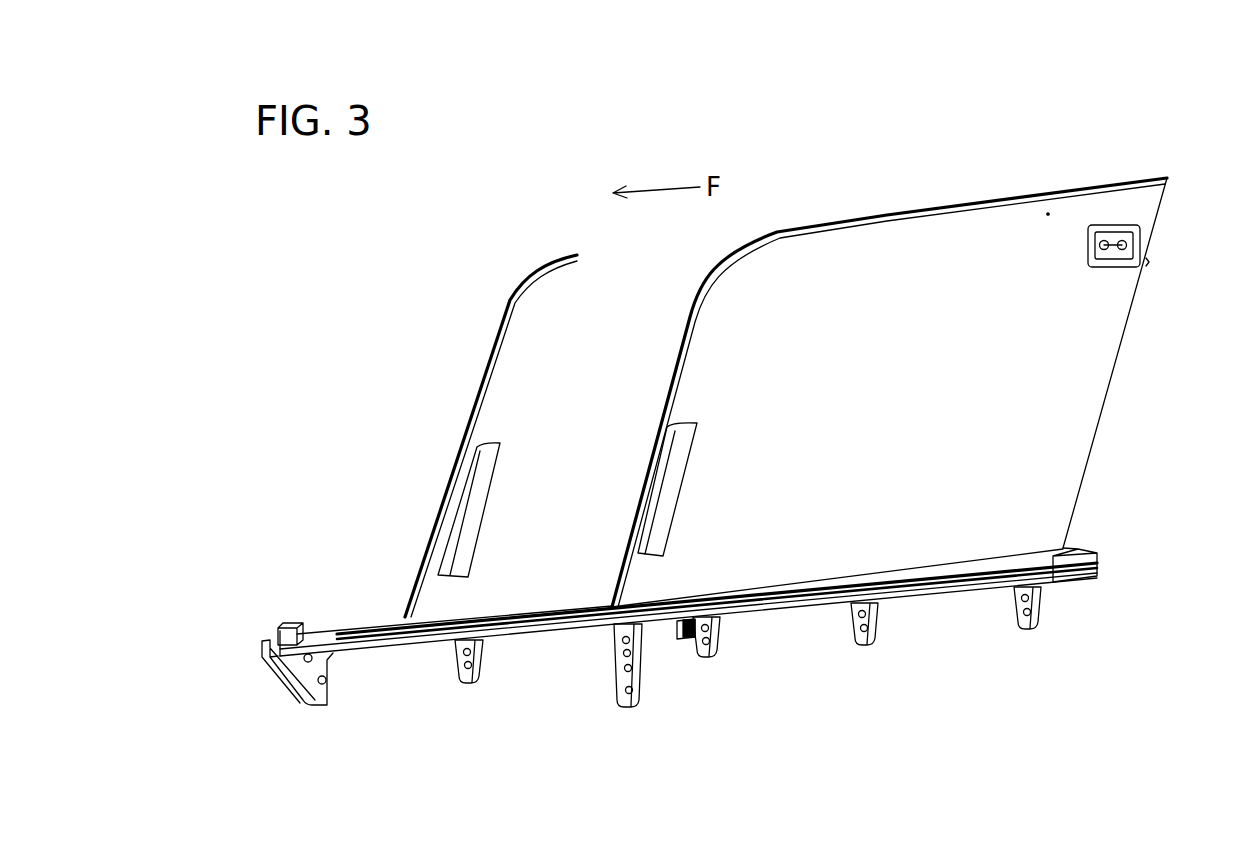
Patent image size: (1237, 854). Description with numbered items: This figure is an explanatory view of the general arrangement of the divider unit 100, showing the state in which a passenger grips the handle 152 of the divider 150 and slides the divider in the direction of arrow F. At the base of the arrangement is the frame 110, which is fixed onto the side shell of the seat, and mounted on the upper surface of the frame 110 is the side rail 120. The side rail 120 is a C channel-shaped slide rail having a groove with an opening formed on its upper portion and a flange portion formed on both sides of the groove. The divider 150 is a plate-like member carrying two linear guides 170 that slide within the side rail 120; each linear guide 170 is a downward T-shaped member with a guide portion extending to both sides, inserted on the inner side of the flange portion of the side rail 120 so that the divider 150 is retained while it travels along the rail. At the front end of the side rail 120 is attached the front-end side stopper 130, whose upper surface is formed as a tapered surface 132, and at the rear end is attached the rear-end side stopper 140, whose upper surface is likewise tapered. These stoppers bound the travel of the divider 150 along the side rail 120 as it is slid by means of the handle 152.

The divider unit 100 is at (1023, 128).
The frame 110 is at (588, 630).
The side rail 120 is at (402, 640).
The front-end side stopper 130 is at (278, 630).
The tapered surface 132 is at (313, 638).
The rear-end side stopper 140 is at (1085, 562).
The divider 150 is at (530, 338).
The handle 152 is at (463, 503).
The linear guide 170 is at (693, 637).